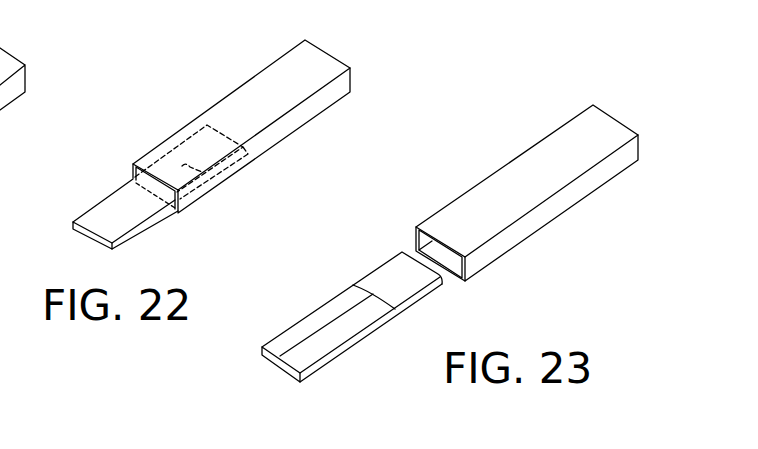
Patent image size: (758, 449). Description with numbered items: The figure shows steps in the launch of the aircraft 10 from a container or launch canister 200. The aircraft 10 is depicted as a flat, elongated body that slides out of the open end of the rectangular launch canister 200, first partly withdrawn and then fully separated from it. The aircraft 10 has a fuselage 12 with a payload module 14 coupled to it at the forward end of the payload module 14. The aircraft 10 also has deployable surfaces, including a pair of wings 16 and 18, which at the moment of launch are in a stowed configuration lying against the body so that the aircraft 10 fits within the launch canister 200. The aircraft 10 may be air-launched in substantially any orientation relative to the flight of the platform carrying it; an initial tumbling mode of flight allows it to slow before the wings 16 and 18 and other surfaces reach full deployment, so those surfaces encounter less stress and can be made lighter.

In FIG. 22, the aircraft 10 is at (101, 232).
In FIG. 23, the aircraft 10 is at (321, 330).
In FIG. 22, the fuselage 12 is at (85, 237).
In FIG. 23, the payload module 14 is at (395, 273).
In FIG. 22, the wing 16 is at (88, 207).
In FIG. 23, the wing 16 is at (276, 351).
In FIG. 22, the wing 18 is at (137, 220).
In FIG. 23, the wing 18 is at (305, 358).
In FIG. 22, the launch canister 200 is at (302, 126).
In FIG. 23, the launch canister 200 is at (510, 162).